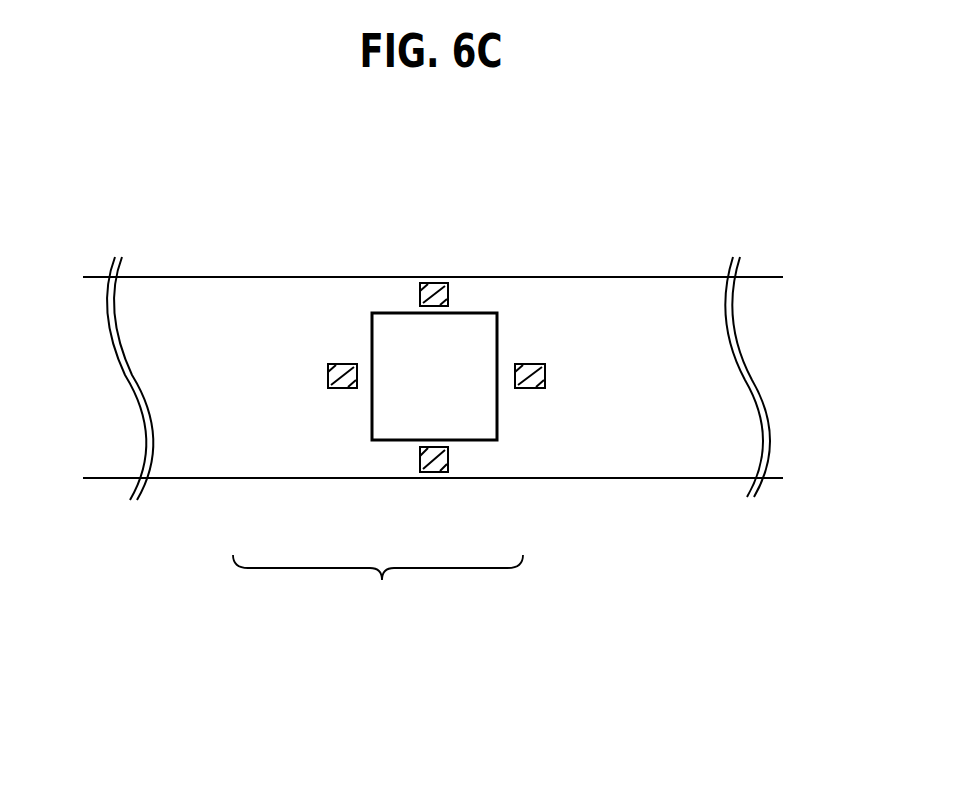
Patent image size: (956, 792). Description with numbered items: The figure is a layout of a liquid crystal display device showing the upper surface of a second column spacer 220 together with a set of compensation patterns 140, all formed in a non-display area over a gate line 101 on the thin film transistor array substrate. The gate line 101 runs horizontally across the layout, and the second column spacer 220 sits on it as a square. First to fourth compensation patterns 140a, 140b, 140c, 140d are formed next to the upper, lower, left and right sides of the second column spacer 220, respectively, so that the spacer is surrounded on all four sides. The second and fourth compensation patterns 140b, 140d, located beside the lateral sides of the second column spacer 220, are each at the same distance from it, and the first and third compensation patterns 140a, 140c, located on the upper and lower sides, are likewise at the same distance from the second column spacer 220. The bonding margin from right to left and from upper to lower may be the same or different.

The gate line 101 is at (608, 280).
The second column spacer 220 is at (480, 322).
The compensation patterns 140 is at (378, 586).
The first compensation pattern 140a is at (420, 297).
The second compensation pattern 140b is at (530, 388).
The third compensation pattern 140c is at (435, 472).
The fourth compensation pattern 140d is at (345, 388).